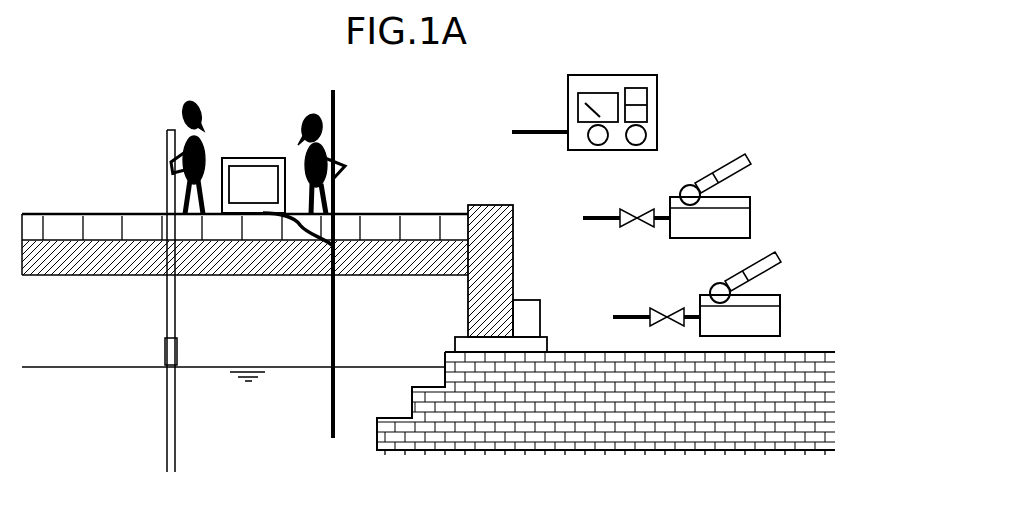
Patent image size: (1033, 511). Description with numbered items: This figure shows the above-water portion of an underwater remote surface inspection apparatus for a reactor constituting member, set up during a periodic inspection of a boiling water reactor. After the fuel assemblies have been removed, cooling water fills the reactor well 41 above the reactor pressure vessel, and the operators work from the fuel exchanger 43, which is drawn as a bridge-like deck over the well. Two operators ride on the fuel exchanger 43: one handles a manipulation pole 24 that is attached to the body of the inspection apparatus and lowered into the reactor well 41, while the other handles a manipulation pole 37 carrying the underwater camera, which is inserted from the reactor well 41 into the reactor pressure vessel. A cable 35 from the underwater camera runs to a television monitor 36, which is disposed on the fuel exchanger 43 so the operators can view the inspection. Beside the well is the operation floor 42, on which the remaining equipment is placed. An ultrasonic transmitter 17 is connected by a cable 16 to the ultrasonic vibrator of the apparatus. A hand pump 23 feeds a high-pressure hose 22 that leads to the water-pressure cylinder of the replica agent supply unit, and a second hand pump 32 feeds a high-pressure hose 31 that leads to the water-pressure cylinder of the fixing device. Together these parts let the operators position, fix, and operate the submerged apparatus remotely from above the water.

The cable 16 is at (537, 130).
The ultrasonic transmitter 17 is at (650, 128).
The high-pressure hose 22 is at (603, 213).
The hand pump 23 is at (752, 222).
The manipulation pole 24 is at (172, 425).
The high-pressure hose 31 is at (635, 312).
The hand pump 32 is at (782, 320).
The cable 35 is at (296, 258).
The television monitor 36 is at (262, 176).
The manipulation pole 37 is at (338, 118).
The reactor well 41 is at (372, 375).
The operation floor 42 is at (578, 352).
The fuel exchanger 43 is at (78, 278).